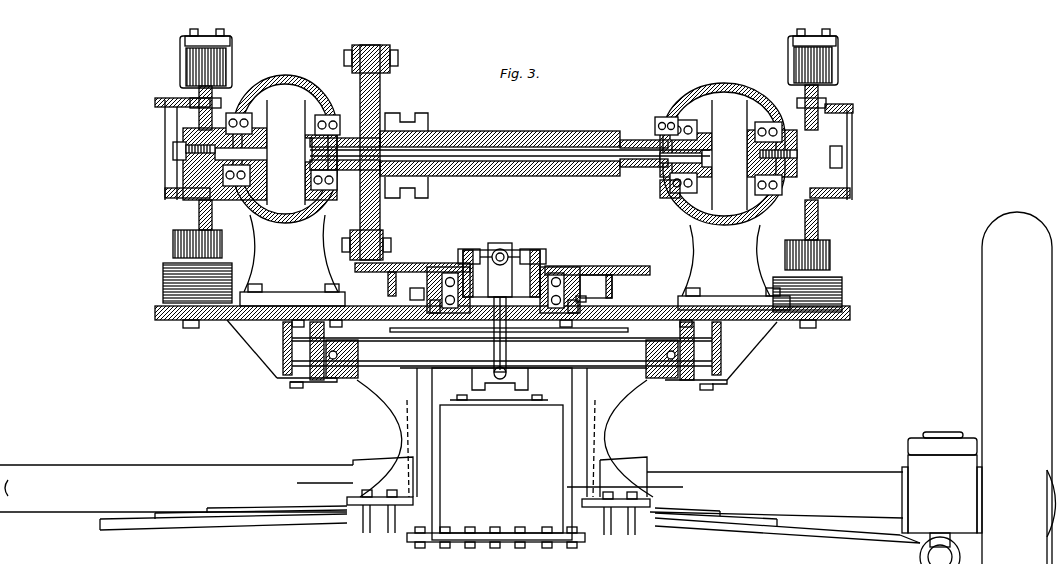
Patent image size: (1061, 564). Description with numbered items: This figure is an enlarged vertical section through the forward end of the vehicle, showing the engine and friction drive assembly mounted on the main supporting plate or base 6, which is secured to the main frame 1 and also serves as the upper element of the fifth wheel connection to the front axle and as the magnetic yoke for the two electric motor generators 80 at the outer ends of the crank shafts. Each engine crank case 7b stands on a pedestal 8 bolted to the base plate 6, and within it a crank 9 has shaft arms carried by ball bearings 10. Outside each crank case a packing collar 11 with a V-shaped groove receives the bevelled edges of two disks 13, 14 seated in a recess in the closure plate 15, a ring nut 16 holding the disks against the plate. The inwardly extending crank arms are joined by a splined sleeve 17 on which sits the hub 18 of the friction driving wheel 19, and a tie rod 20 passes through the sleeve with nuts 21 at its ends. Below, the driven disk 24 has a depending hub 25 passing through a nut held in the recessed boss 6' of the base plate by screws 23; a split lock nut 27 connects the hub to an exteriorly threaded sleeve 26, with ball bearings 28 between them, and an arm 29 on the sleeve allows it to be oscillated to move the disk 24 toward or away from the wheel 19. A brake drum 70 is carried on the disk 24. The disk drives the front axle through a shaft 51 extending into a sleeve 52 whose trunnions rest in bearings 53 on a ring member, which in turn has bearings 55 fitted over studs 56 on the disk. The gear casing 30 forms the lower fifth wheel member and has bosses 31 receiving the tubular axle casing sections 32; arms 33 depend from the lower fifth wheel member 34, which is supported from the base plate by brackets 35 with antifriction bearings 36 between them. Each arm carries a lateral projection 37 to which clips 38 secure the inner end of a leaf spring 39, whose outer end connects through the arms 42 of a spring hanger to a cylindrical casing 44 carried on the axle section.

The main frame 1 is at (283, 345).
The main supporting plate or base 6 is at (502, 303).
The recessed boss 6' is at (597, 256).
The crank case 7b is at (292, 226).
The pedestal 8 is at (734, 267).
The crank 9 is at (284, 182).
The ball bearings 10 is at (250, 120).
The packing collar 11 is at (382, 196).
The disk 13 is at (656, 122).
The disk 14 is at (660, 128).
The closure plate 15 is at (252, 95).
The ring nut 16 is at (382, 100).
The sleeve 17 is at (570, 133).
The hub 18 is at (392, 113).
The friction driving wheel 19 is at (385, 52).
The tie rod 20 is at (530, 168).
The nuts 21 is at (303, 140).
The screws 23 is at (388, 296).
The driven disk 24 is at (398, 263).
The depending hub 25 is at (482, 300).
The exteriorly threaded sleeve 26 is at (445, 267).
The split lock nut 27 is at (438, 313).
The ball bearings 28 is at (570, 313).
The arm 29 is at (390, 330).
The gear casing 30 is at (496, 458).
The laterally projecting bosses 31 is at (624, 466).
The sections of tubular axle casing 32 is at (180, 466).
The arms 33 is at (428, 388).
The lower fifth wheel member 34 is at (338, 380).
The brackets 35 is at (285, 362).
The antifriction bearings 36 is at (340, 352).
The lateral projection 37 is at (652, 503).
The clips 38 is at (370, 533).
The leaf spring 39 is at (296, 520).
The arms of spring hanger 42 is at (908, 446).
The cylindrical casing 44 is at (979, 388).
The shaft 51 is at (507, 330).
The sleeve 52 is at (496, 258).
The bearings 53 is at (504, 249).
The bearings 55 is at (528, 249).
The studs 56 is at (540, 252).
The brake drum 70 is at (612, 292).
The electric motor generators 80 is at (180, 60).